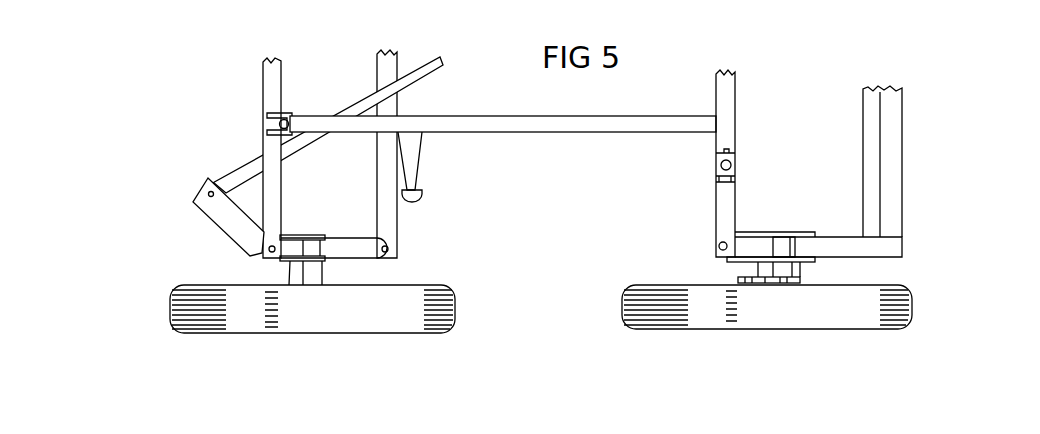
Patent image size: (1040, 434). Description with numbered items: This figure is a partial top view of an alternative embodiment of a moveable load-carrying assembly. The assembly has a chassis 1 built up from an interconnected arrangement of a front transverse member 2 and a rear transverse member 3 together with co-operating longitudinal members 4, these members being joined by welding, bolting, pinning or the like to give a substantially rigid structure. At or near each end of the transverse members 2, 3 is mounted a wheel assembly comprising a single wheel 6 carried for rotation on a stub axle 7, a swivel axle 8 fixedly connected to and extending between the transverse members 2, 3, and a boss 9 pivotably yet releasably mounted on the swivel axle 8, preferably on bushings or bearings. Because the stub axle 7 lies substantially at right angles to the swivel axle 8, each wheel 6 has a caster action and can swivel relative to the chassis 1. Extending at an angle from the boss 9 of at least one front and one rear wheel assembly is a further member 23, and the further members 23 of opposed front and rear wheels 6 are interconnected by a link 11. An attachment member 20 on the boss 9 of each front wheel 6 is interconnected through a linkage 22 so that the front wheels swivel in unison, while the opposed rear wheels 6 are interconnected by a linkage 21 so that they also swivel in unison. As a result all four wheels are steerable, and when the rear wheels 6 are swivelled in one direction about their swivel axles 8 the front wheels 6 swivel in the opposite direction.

The chassis 1 is at (212, 110).
The front transverse member 2 is at (270, 232).
The rear transverse member 3 is at (727, 90).
The longitudinal member 4 is at (568, 128).
The wheel 6 is at (238, 318).
The stub axle 7 is at (315, 277).
The swivel axle 8 is at (263, 251).
The boss 9 is at (290, 263).
The link 11 is at (228, 175).
The attachment member 20 is at (358, 248).
The linkage 21 is at (890, 147).
The linkage 22 is at (393, 226).
The further member 23 is at (203, 210).